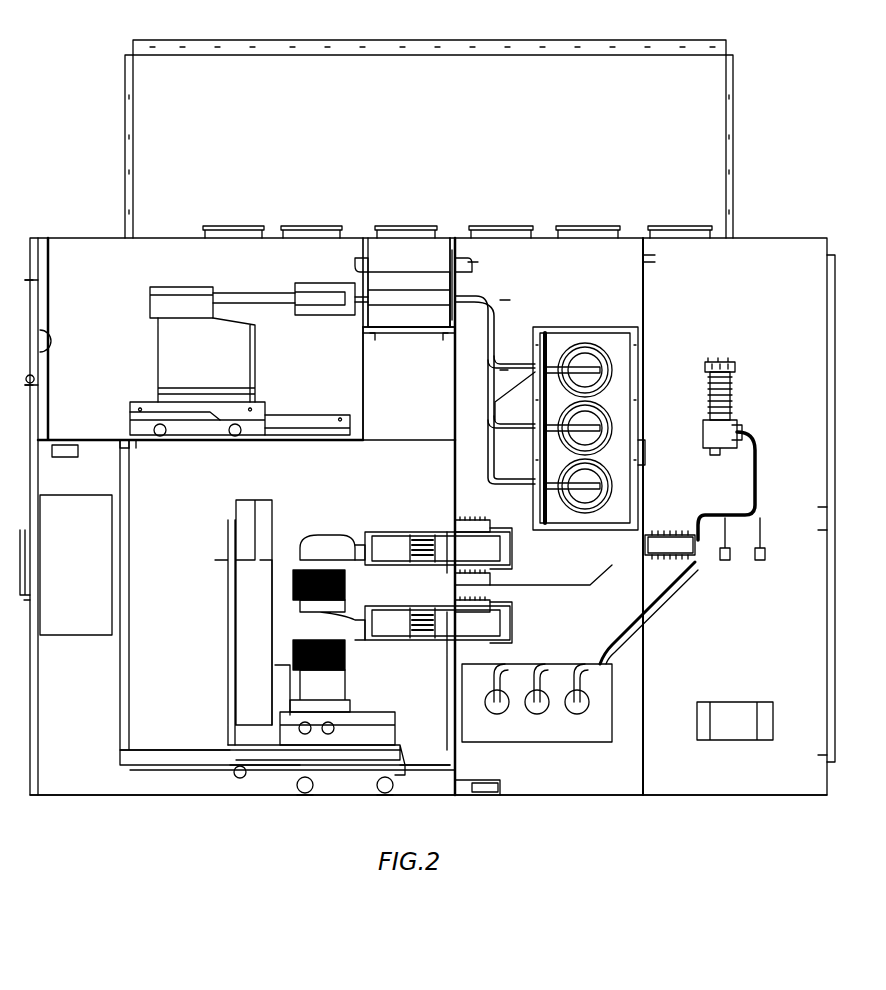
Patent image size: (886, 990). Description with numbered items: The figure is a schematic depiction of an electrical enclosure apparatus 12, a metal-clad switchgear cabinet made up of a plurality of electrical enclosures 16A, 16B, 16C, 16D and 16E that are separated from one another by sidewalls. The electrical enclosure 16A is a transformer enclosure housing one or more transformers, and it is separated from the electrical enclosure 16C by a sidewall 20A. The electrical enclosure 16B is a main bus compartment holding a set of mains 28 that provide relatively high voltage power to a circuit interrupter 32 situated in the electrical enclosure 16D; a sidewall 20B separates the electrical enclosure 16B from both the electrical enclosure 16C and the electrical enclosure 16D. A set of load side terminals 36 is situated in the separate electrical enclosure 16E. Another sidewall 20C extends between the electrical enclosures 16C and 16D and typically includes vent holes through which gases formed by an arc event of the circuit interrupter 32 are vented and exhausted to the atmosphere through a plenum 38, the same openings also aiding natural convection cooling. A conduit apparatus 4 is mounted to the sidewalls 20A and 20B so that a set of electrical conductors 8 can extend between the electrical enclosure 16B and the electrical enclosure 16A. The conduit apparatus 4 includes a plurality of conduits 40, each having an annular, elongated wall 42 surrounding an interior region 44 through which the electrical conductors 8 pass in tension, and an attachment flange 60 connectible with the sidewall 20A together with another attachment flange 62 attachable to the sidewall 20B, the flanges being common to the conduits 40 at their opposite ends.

The conduit apparatus 4 is at (400, 270).
The electrical conductors 8 is at (482, 300).
The electrical enclosure apparatus 12 is at (744, 190).
The electrical enclosure 16A is at (90, 254).
The electrical enclosure 16B is at (570, 258).
The electrical enclosure 16C is at (392, 442).
The electrical enclosure 16D is at (152, 665).
The electrical enclosure 16E is at (775, 265).
The sidewall 20A is at (360, 372).
The sidewall 20B is at (450, 390).
The sidewall 20C is at (430, 445).
The mains 28 is at (572, 328).
The circuit interrupter 32 is at (318, 535).
The load side terminals 36 is at (735, 388).
The plenum 38 is at (570, 78).
The conduits 40 is at (372, 262).
The wall 42 is at (442, 262).
The interior region 44 is at (435, 318).
The attachment flange 60 is at (360, 258).
The attachment flange 62 is at (462, 258).